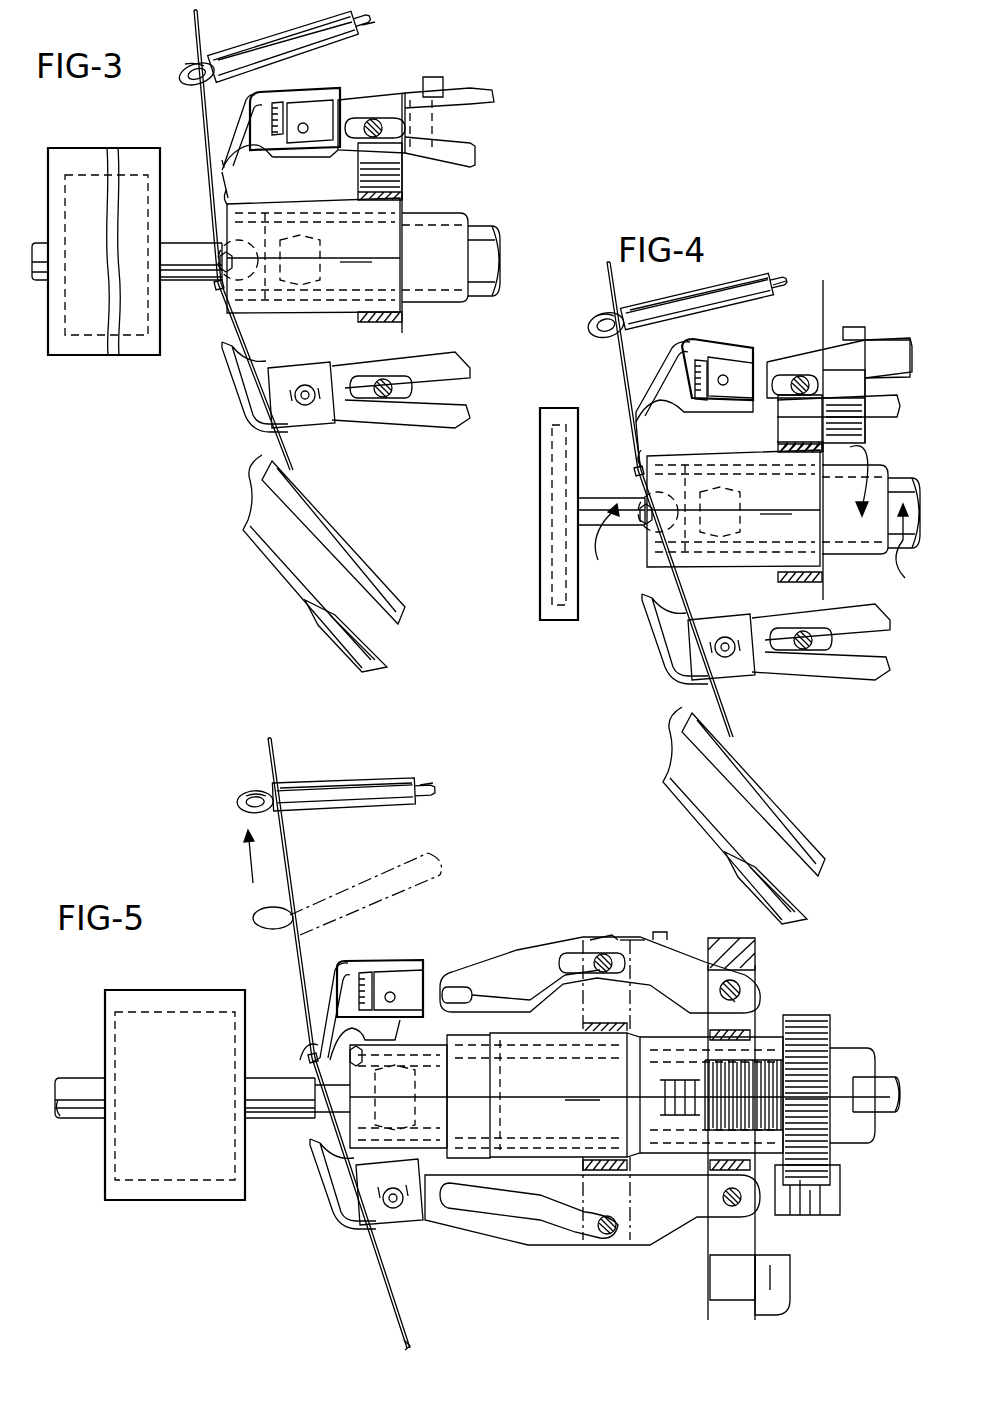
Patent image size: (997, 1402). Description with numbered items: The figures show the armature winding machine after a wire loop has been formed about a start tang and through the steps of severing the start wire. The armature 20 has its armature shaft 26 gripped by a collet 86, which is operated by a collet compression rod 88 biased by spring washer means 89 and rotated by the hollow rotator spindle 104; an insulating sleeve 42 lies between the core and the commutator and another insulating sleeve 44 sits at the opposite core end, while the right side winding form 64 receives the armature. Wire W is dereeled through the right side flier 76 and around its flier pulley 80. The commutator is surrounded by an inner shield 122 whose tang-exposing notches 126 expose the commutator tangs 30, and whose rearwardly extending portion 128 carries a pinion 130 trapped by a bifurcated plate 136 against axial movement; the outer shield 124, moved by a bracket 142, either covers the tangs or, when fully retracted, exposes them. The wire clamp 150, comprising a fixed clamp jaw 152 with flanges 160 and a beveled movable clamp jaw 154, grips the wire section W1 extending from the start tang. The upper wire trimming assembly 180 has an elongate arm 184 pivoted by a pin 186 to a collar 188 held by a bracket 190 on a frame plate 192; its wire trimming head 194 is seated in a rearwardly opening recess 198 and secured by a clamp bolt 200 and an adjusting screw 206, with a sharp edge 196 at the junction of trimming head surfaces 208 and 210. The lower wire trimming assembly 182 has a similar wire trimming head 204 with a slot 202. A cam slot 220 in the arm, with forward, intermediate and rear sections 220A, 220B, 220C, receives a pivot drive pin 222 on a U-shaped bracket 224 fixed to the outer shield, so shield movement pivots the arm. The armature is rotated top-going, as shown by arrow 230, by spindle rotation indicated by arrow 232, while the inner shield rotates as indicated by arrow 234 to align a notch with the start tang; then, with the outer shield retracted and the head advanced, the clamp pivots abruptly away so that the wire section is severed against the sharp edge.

In FIG. 3, the armature 20 is at (104, 250).
In FIG. 4, the armature 20 is at (533, 514).
In FIG. 5, the armature 20 is at (175, 1074).
In FIG. 5, the armature shaft 26 is at (72, 1114).
In FIG. 3, the tangs 30 is at (214, 288).
In FIG. 4, the tangs 30 is at (634, 476).
In FIG. 5, the tangs 30 is at (308, 1062).
In FIG. 3, the insulating sleeve 42 is at (170, 252).
In FIG. 5, the insulating sleeve 42 is at (256, 1093).
In FIG. 3, the insulating sleeve 44 is at (50, 252).
In FIG. 4, the insulating sleeve 44 is at (580, 508).
In FIG. 5, the insulating sleeve 44 is at (88, 1080).
In FIG. 3, the right side winding form 64 is at (118, 148).
In FIG. 4, the right side winding form 64 is at (532, 592).
In FIG. 5, the right side winding form 64 is at (143, 995).
In FIG. 3, the right side flier 76 is at (332, 520).
In FIG. 4, the right side flier 76 is at (766, 792).
In FIG. 3, the flier pulley 80 is at (314, 606).
In FIG. 4, the flier pulley 80 is at (812, 898).
In FIG. 3, the collet 86 is at (313, 242).
In FIG. 4, the collet 86 is at (733, 499).
In FIG. 5, the collet 86 is at (611, 1095).
In FIG. 5, the collet compression rod 88 is at (882, 1080).
In FIG. 5, the spring washer means 89 is at (760, 1040).
In FIG. 3, the rotator spindle 104 is at (492, 242).
In FIG. 4, the rotator spindle 104 is at (880, 546).
In FIG. 3, the inner shield 122 is at (452, 220).
In FIG. 4, the inner shield 122 is at (882, 476).
In FIG. 5, the inner shield 122 is at (322, 1118).
In FIG. 3, the outer shield 124 is at (372, 274).
In FIG. 4, the outer shield 124 is at (790, 529).
In FIG. 5, the outer shield 124 is at (598, 1113).
In FIG. 3, the tang-exposing notches 126 is at (228, 258).
In FIG. 4, the tang-exposing notches 126 is at (670, 472).
In FIG. 5, the tang-exposing notches 126 is at (362, 1048).
In FIG. 5, the rearwardly extending portion 128 is at (676, 1040).
In FIG. 5, the pinion 130 is at (801, 1015).
In FIG. 5, the bifurcated plate 136 is at (832, 1206).
In FIG. 3, the bracket 142 is at (437, 76).
In FIG. 4, the bracket 142 is at (858, 326).
In FIG. 5, the bracket 142 is at (661, 932).
In FIG. 3, the wire clamp 150 is at (298, 24).
In FIG. 4, the wire clamp 150 is at (668, 292).
In FIG. 5, the wire clamp 150 is at (436, 860).
In FIG. 3, the fixed clamp jaw 152 is at (244, 50).
In FIG. 4, the fixed clamp jaw 152 is at (734, 282).
In FIG. 5, the fixed clamp jaw 152 is at (379, 808).
In FIG. 3, the movable clamp jaw 154 is at (366, 26).
In FIG. 4, the movable clamp jaw 154 is at (773, 281).
In FIG. 5, the movable clamp jaw 154 is at (293, 796).
In FIG. 3, the flanges 160 is at (194, 60).
In FIG. 4, the flanges 160 is at (606, 314).
In FIG. 5, the flanges 160 is at (254, 792).
In FIG. 3, the upper wire trimming assembly 180 is at (432, 175).
In FIG. 4, the upper wire trimming assembly 180 is at (829, 434).
In FIG. 5, the upper wire trimming assembly 180 is at (615, 1094).
In FIG. 3, the lower wire trimming assembly 182 is at (432, 428).
In FIG. 4, the lower wire trimming assembly 182 is at (862, 684).
In FIG. 5, the lower wire trimming assembly 182 is at (510, 1258).
In FIG. 3, the elongate arm 184 is at (472, 104).
In FIG. 4, the elongate arm 184 is at (847, 365).
In FIG. 5, the elongate arm 184 is at (604, 945).
In FIG. 5, the pin 186 is at (741, 988).
In FIG. 5, the collar 188 is at (733, 930).
In FIG. 5, the bracket 190 is at (710, 1286).
In FIG. 5, the frame plate 192 is at (782, 1291).
In FIG. 3, the wire trimming head 194 is at (303, 123).
In FIG. 4, the wire trimming head 194 is at (700, 355).
In FIG. 5, the wire trimming head 194 is at (380, 1091).
In FIG. 3, the sharp edge 196 is at (226, 188).
In FIG. 4, the sharp edge 196 is at (640, 442).
In FIG. 5, the sharp edge 196 is at (306, 1036).
In FIG. 3, the rearwardly opening recess 198 is at (291, 102).
In FIG. 4, the rearwardly opening recess 198 is at (690, 350).
In FIG. 5, the rearwardly opening recess 198 is at (368, 968).
In FIG. 3, the clamp bolt 200 is at (306, 134).
In FIG. 4, the clamp bolt 200 is at (727, 375).
In FIG. 5, the clamp bolt 200 is at (392, 991).
In FIG. 3, the slot 202 is at (319, 404).
In FIG. 4, the slot 202 is at (752, 675).
In FIG. 5, the slot 202 is at (416, 1212).
In FIG. 3, the wire trimming head 204 is at (228, 384).
In FIG. 4, the wire trimming head 204 is at (650, 665).
In FIG. 5, the wire trimming head 204 is at (316, 1201).
In FIG. 3, the adjusting screw 206 is at (249, 98).
In FIG. 4, the adjusting screw 206 is at (663, 379).
In FIG. 5, the adjusting screw 206 is at (340, 950).
In FIG. 3, the trimming head surface 208 is at (250, 165).
In FIG. 4, the trimming head surface 208 is at (666, 422).
In FIG. 5, the trimming head surface 208 is at (322, 1012).
In FIG. 3, the trimming head surface 210 is at (222, 158).
In FIG. 4, the trimming head surface 210 is at (638, 404).
In FIG. 5, the trimming head surface 210 is at (317, 1000).
In FIG. 5, the cam slot 220 is at (500, 940).
In FIG. 3, the forward cam slot section 220A is at (366, 124).
In FIG. 4, the forward cam slot section 220A is at (782, 376).
In FIG. 5, the forward cam slot section 220A is at (466, 990).
In FIG. 5, the intermediate cam slot section 220B is at (548, 970).
In FIG. 5, the rear cam slot section 220C is at (578, 952).
In FIG. 3, the pivot drive pin 222 is at (380, 140).
In FIG. 4, the pivot drive pin 222 is at (805, 378).
In FIG. 5, the pivot drive pin 222 is at (617, 968).
In FIG. 4, the U-shaped bracket 224 is at (795, 426).
In FIG. 5, the U-shaped bracket 224 is at (623, 940).
In FIG. 4, the arrow 230 is at (604, 562).
In FIG. 4, the arrow 232 is at (905, 576).
In FIG. 4, the arrow 234 is at (850, 447).
In FIG. 3, the wire W is at (262, 457).
In FIG. 4, the wire W is at (682, 710).
In FIG. 5, the wire W is at (379, 1266).
In FIG. 3, the wire section W1 is at (206, 126).
In FIG. 4, the wire section W1 is at (622, 385).
In FIG. 5, the wire section W1 is at (290, 838).